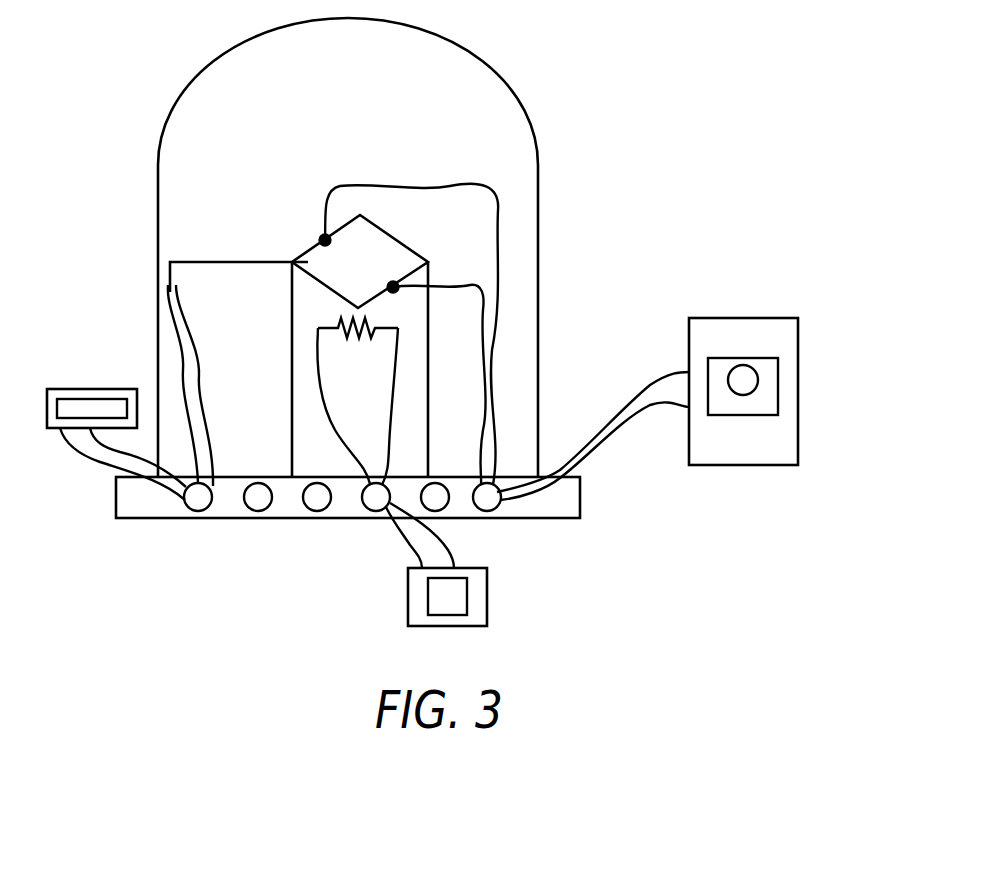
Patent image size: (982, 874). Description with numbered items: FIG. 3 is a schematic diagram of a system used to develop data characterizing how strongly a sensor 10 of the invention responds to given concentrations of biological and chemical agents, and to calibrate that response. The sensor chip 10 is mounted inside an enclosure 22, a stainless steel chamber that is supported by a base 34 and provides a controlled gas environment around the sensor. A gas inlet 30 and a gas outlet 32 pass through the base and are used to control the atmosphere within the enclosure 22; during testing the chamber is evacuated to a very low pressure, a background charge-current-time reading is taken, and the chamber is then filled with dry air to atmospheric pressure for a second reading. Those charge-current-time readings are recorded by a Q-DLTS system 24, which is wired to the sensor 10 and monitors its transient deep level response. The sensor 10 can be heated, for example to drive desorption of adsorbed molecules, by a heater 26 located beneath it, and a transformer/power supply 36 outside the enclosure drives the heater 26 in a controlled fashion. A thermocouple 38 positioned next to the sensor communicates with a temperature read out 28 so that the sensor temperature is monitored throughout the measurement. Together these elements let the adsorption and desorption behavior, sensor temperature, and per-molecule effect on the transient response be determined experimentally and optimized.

The sensor 10 is at (368, 253).
The enclosure 22 is at (447, 40).
The Q-DLTS system 24 is at (798, 402).
The heater 26 is at (373, 322).
The temperature read out 28 is at (83, 389).
The gas inlet 30 is at (327, 518).
The gas outlet 32 is at (243, 518).
The base 34 is at (468, 519).
The transformer/power supply 36 is at (487, 601).
The thermocouple 38 is at (213, 261).